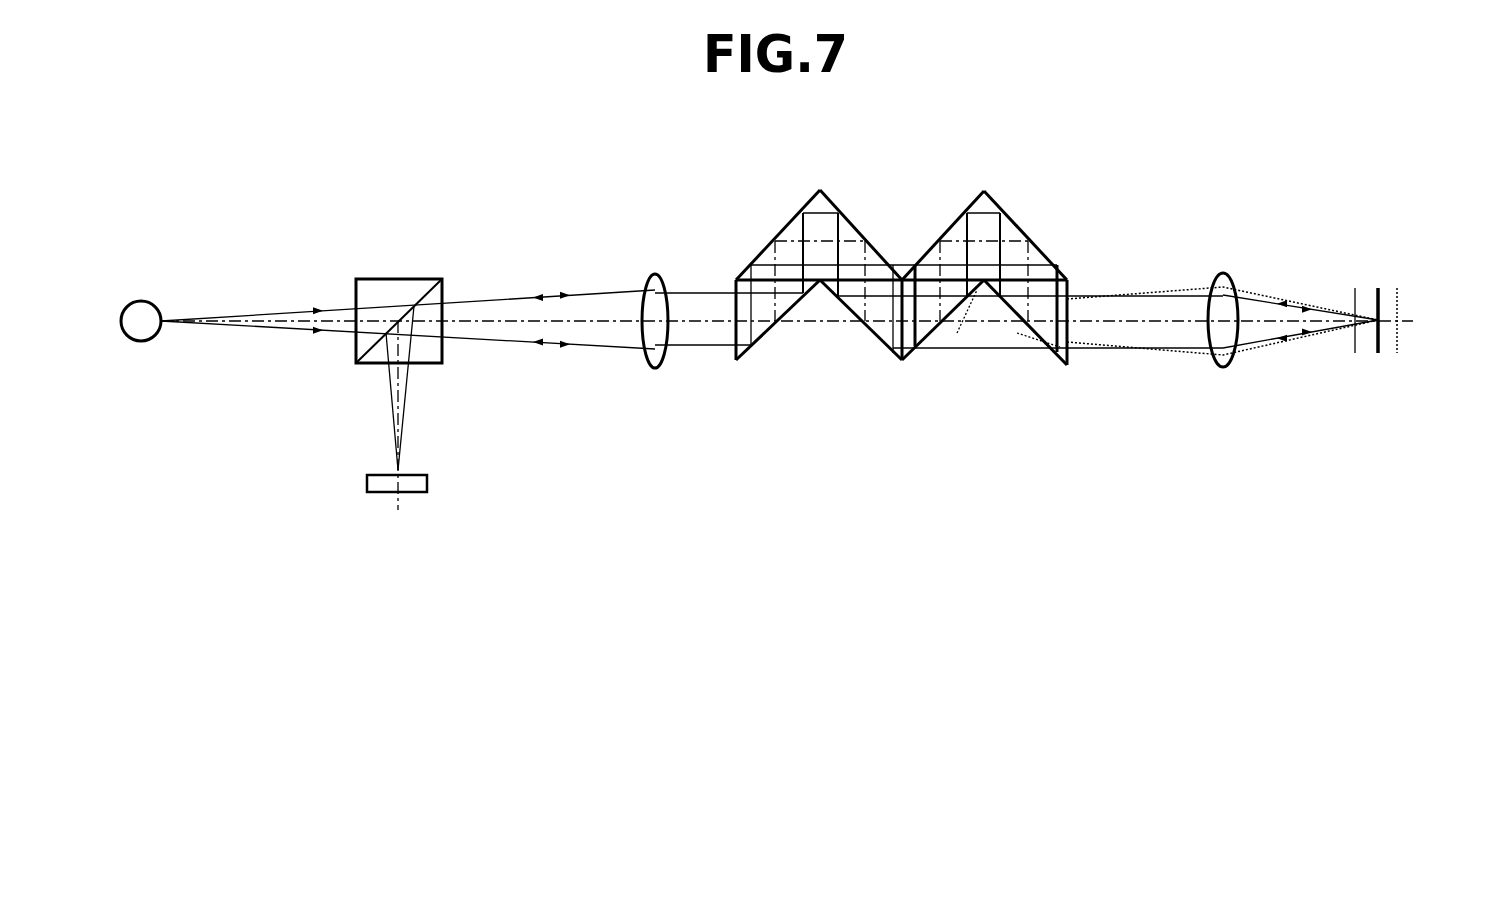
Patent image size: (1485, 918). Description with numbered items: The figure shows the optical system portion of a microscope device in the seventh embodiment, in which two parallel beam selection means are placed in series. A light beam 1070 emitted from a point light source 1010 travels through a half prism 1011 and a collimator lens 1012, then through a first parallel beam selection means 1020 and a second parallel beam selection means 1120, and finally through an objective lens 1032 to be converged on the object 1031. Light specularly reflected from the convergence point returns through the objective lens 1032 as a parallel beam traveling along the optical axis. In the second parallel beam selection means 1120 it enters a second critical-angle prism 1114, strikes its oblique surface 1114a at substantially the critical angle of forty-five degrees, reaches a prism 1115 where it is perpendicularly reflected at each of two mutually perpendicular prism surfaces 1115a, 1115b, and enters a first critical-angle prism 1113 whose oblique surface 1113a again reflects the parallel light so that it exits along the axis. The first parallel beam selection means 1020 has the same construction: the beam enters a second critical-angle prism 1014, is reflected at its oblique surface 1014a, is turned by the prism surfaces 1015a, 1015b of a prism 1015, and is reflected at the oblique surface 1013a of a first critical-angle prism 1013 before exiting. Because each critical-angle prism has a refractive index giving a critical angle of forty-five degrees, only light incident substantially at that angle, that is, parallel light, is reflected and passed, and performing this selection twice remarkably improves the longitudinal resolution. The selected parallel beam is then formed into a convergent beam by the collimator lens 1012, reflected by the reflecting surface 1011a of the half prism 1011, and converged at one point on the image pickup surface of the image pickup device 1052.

The point light source 1010 is at (153, 301).
The half prism 1011 is at (438, 285).
The reflecting surface 1011a is at (431, 282).
The light beam 1070 is at (263, 327).
The image pickup device 1052 is at (427, 477).
The collimator lens 1012 is at (645, 285).
The first parallel beam selection means 1020 is at (805, 280).
The prism 1015 is at (808, 265).
The prism surface 1015a is at (886, 234).
The prism surface 1015b is at (766, 248).
The first critical-angle prism 1013 is at (808, 353).
The oblique surface 1013a is at (772, 328).
The second critical-angle prism 1014 is at (845, 360).
The oblique surface 1014a is at (840, 302).
The second parallel beam selection means 1120 is at (1027, 289).
The prism 1115 is at (1019, 247).
The prism surface 1115a is at (1044, 250).
The prism surface 1115b is at (977, 197).
The first critical-angle prism 1113 is at (972, 358).
The oblique surface 1113a is at (932, 332).
The second critical-angle prism 1114 is at (1052, 345).
The oblique surface 1114a is at (1000, 298).
The objective lens 1032 is at (1234, 278).
The object 1031 is at (1377, 275).